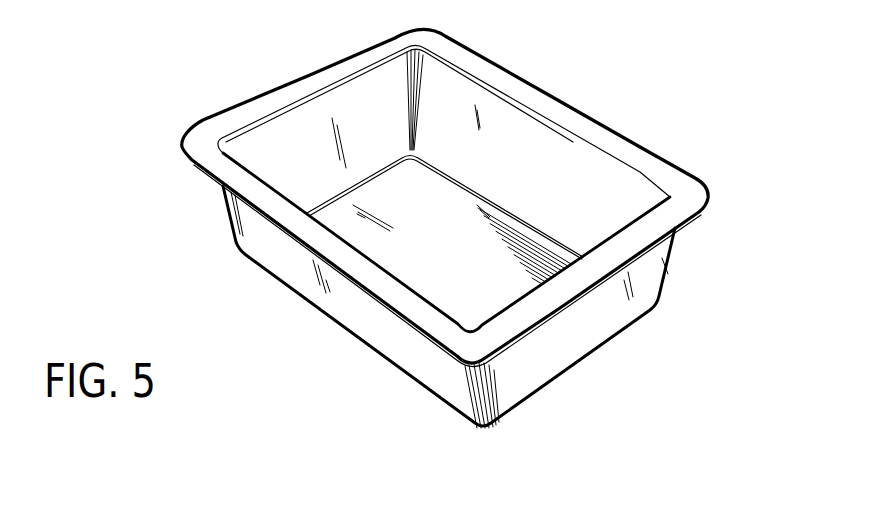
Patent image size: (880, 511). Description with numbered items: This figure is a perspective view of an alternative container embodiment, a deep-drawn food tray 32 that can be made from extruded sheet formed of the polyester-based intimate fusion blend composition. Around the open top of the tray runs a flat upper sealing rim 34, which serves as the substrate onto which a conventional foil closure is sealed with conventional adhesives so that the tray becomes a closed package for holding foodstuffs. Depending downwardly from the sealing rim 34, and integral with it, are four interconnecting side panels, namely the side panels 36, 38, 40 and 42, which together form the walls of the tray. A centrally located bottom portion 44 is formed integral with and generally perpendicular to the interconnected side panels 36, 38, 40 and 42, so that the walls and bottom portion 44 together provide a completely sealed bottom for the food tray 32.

The deep-drawn food tray 32 is at (638, 132).
The flat upper sealing rim 34 is at (580, 114).
The side panel 36 is at (623, 186).
The side panel 38 is at (640, 288).
The side panel 40 is at (348, 291).
The side panel 42 is at (268, 158).
The bottom portion 44 is at (462, 252).